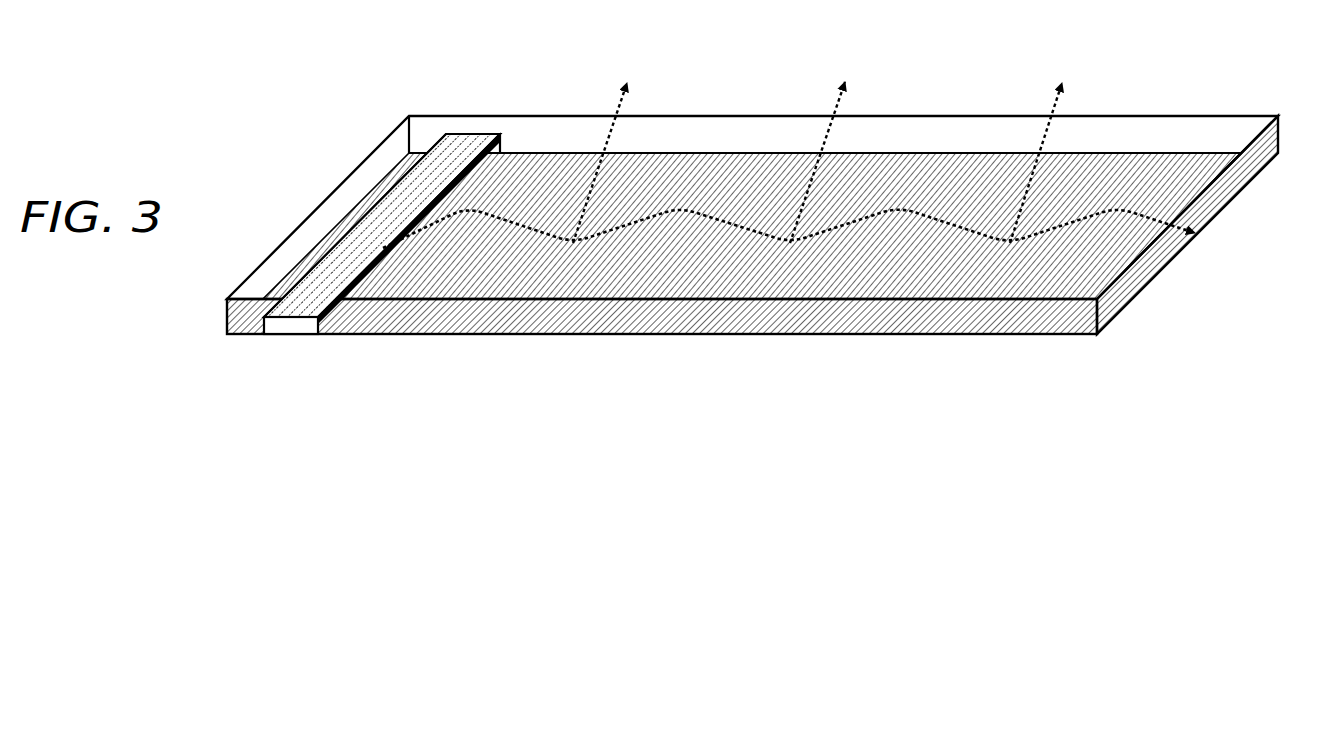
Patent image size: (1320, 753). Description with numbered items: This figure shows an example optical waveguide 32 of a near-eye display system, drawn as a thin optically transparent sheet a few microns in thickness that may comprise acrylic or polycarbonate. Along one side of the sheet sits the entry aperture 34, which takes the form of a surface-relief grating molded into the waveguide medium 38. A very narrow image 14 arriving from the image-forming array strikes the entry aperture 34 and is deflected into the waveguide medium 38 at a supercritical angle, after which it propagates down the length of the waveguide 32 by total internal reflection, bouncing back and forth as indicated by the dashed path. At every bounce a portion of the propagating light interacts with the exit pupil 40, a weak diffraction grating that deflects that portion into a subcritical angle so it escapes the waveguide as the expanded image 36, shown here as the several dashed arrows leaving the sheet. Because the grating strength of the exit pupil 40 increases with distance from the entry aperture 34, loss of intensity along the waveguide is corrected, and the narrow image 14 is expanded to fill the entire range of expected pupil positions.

The waveguide 32 is at (752, 223).
The entry aperture 34 is at (292, 334).
The expanded image 36 is at (823, 149).
The waveguide medium 38 is at (707, 116).
The exit pupil 40 is at (963, 182).
The image 14 is at (383, 248).